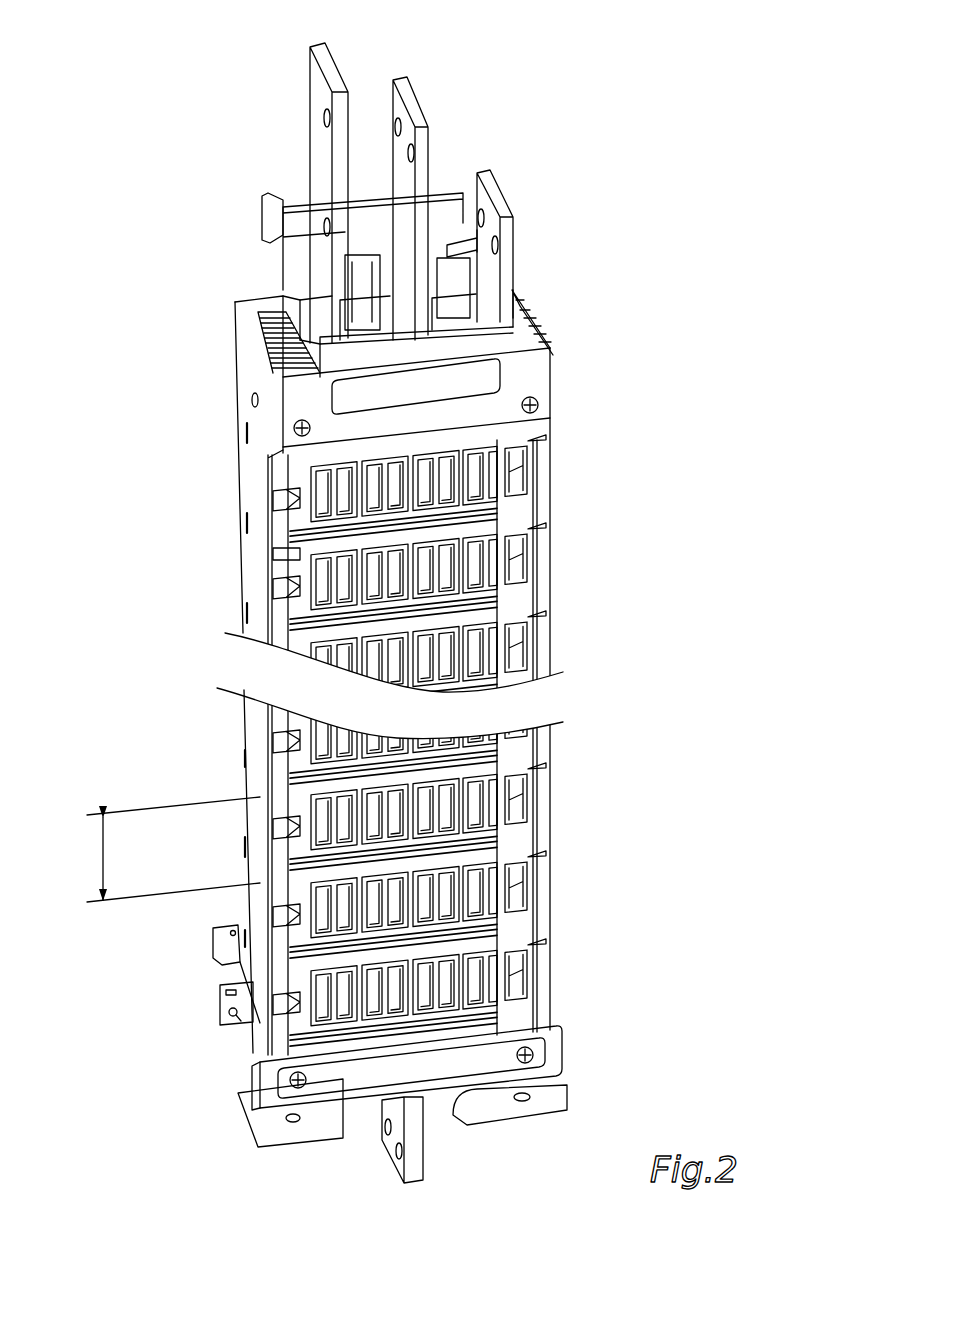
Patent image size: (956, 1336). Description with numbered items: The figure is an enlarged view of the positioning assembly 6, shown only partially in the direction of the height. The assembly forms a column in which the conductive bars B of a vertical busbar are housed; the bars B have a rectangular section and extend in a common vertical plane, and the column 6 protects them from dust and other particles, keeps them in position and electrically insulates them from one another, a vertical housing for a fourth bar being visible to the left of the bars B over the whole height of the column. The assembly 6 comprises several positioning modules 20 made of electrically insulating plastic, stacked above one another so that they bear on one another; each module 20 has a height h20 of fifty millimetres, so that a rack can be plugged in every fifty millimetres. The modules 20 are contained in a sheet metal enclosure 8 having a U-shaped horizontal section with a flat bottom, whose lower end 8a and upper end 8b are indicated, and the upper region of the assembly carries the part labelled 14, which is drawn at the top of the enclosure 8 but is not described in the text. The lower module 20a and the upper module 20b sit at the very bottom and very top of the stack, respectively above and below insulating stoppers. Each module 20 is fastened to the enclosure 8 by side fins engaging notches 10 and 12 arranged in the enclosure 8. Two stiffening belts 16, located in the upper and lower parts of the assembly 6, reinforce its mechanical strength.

The conductive bar B is at (398, 147).
The positioning assembly 6 is at (150, 934).
The sheet metal enclosure 8 is at (247, 723).
The lower end of the enclosure 8a is at (250, 967).
The upper end of the enclosure 8b is at (247, 422).
The notch 10 is at (240, 435).
The notch 12 is at (261, 568).
The upper housing part 14 is at (247, 347).
The stiffening belt 16 is at (462, 412).
The positioning module 20 is at (537, 642).
The lower module 20a is at (535, 973).
The upper module 20b is at (537, 479).
The module height h20 is at (162, 849).